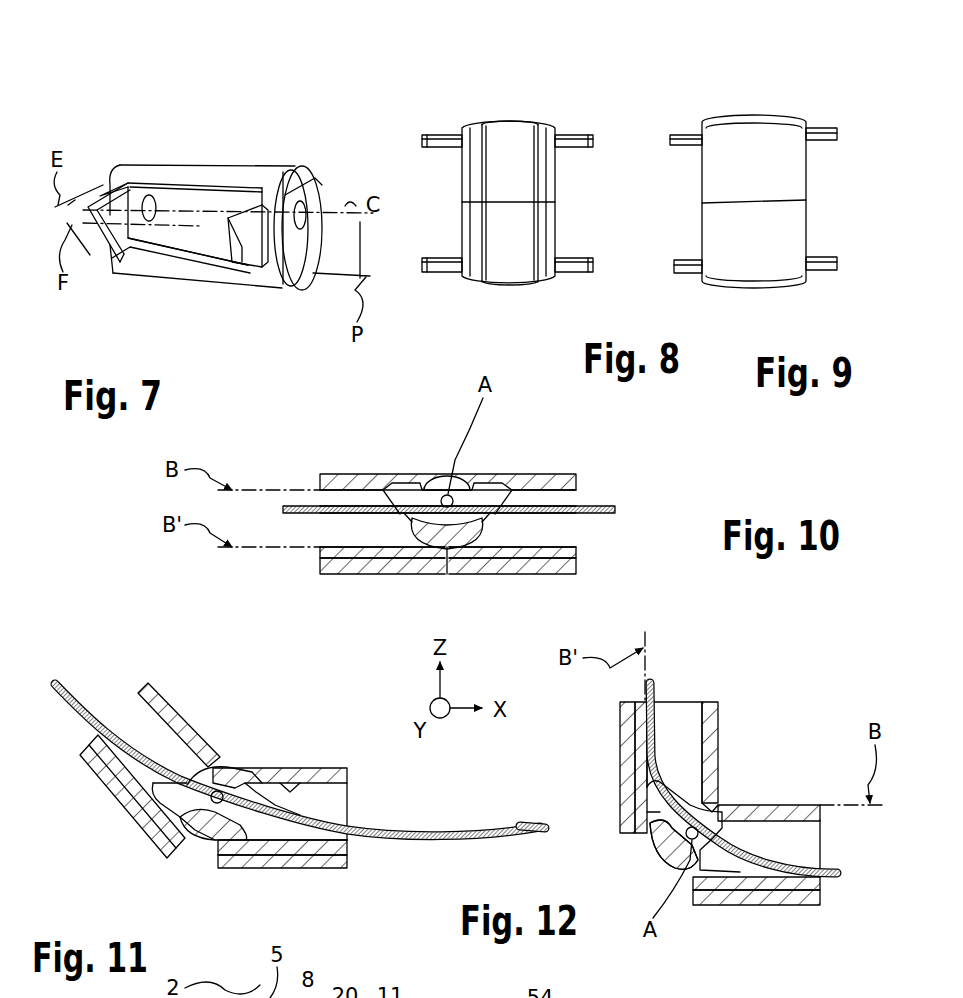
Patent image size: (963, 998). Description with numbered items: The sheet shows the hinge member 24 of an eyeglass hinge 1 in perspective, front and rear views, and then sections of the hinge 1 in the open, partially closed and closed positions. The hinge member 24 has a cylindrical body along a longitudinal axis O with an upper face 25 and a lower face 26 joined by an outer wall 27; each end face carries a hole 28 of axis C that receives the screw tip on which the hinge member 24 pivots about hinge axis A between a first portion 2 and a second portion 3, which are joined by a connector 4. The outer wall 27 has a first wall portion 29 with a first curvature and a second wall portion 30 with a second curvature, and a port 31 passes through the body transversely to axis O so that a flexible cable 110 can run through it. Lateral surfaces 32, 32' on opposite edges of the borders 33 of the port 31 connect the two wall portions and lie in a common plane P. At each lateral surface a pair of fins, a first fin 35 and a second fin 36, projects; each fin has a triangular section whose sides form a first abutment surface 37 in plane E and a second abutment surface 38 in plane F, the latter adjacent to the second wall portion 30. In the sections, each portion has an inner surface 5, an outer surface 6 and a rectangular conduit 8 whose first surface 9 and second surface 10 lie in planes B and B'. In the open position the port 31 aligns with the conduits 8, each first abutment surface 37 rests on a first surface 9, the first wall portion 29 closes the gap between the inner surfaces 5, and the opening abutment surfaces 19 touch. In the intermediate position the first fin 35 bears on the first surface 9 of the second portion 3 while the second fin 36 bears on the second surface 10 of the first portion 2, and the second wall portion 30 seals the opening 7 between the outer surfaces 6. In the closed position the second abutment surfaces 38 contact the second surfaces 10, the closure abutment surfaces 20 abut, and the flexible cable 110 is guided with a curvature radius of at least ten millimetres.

In FIG. 11, the hinge 1 is at (150, 665).
In FIG. 12, the hinge 1 is at (833, 712).
In FIG. 10, the first portion 2 is at (325, 566).
In FIG. 11, the first portion 2 is at (75, 737).
In FIG. 12, the first portion 2 is at (713, 697).
In FIG. 10, the second portion 3 is at (565, 552).
In FIG. 11, the second portion 3 is at (343, 870).
In FIG. 12, the second portion 3 is at (815, 900).
In FIG. 12, the connector 4 is at (590, 997).
In FIG. 10, the inner surface 5 is at (333, 474).
In FIG. 11, the inner surface 5 is at (178, 698).
In FIG. 12, the inner surface 5 is at (725, 716).
In FIG. 10, the outer surface 6 is at (345, 580).
In FIG. 11, the outer surface 6 is at (95, 785).
In FIG. 12, the outer surface 6 is at (615, 742).
In FIG. 11, the opening 7 is at (203, 847).
In FIG. 12, the opening 7 is at (640, 865).
In FIG. 10, the conduit 8 is at (340, 535).
In FIG. 11, the conduit 8 is at (145, 675).
In FIG. 12, the conduit 8 is at (695, 707).
In FIG. 10, the first surface 9 is at (565, 493).
In FIG. 11, the first surface 9 is at (343, 793).
In FIG. 12, the first surface 9 is at (790, 823).
In FIG. 10, the second surface 10 is at (370, 540).
In FIG. 11, the second surface 10 is at (112, 745).
In FIG. 12, the second surface 10 is at (655, 718).
In FIG. 10, the opening abutment surface 19 is at (443, 574).
In FIG. 11, the opening abutment surface 19 is at (170, 857).
In FIG. 12, the opening abutment surface 19 is at (650, 845).
In FIG. 10, the closure abutment surface 20 is at (437, 483).
In FIG. 12, the closure abutment surface 20 is at (725, 795).
In FIG. 7, the hinge member 24 is at (160, 152).
In FIG. 8, the hinge member 24 is at (535, 107).
In FIG. 9, the hinge member 24 is at (780, 108).
In FIG. 8, the upper face 25 is at (511, 118).
In FIG. 7, the lower face 26 is at (300, 288).
In FIG. 8, the lower face 26 is at (516, 288).
In FIG. 9, the lower face 26 is at (835, 133).
In FIG. 7, the outer wall 27 is at (280, 167).
In FIG. 9, the outer wall 27 is at (780, 230).
In FIG. 7, the hole 28 is at (306, 215).
In FIG. 7, the first wall portion 29 is at (247, 165).
In FIG. 8, the first wall portion 29 is at (518, 178).
In FIG. 10, the first wall portion 29 is at (447, 476).
In FIG. 11, the first wall portion 29 is at (225, 780).
In FIG. 7, the second wall portion 30 is at (255, 280).
In FIG. 9, the second wall portion 30 is at (783, 178).
In FIG. 10, the second wall portion 30 is at (477, 540).
In FIG. 11, the second wall portion 30 is at (212, 842).
In FIG. 12, the second wall portion 30 is at (672, 872).
In FIG. 7, the port 31 is at (196, 205).
In FIG. 8, the lateral surface 32 is at (563, 197).
In FIG. 7, the lateral surface 32' is at (312, 196).
In FIG. 8, the lateral surface 32' is at (469, 197).
In FIG. 7, the border 33 is at (137, 185).
In FIG. 8, the border 33 is at (480, 190).
In FIG. 7, the first fin 35 is at (308, 182).
In FIG. 8, the first fin 35 is at (590, 141).
In FIG. 9, the first fin 35 is at (680, 140).
In FIG. 11, the first fin 35 is at (300, 778).
In FIG. 7, the second fin 36 is at (245, 245).
In FIG. 8, the second fin 36 is at (433, 140).
In FIG. 9, the second fin 36 is at (838, 262).
In FIG. 11, the second fin 36 is at (177, 800).
In FIG. 12, the second fin 36 is at (655, 812).
In FIG. 7, the first abutment surface 37 is at (100, 195).
In FIG. 8, the first abutment surface 37 is at (573, 135).
In FIG. 10, the first abutment surface 37 is at (400, 487).
In FIG. 11, the first abutment surface 37 is at (268, 782).
In FIG. 7, the second abutment surface 38 is at (112, 265).
In FIG. 9, the second abutment surface 38 is at (692, 130).
In FIG. 12, the second abutment surface 38 is at (640, 792).
In FIG. 10, the flexible cable 110 is at (615, 510).
In FIG. 11, the flexible cable 110 is at (72, 700).
In FIG. 12, the flexible cable 110 is at (718, 822).